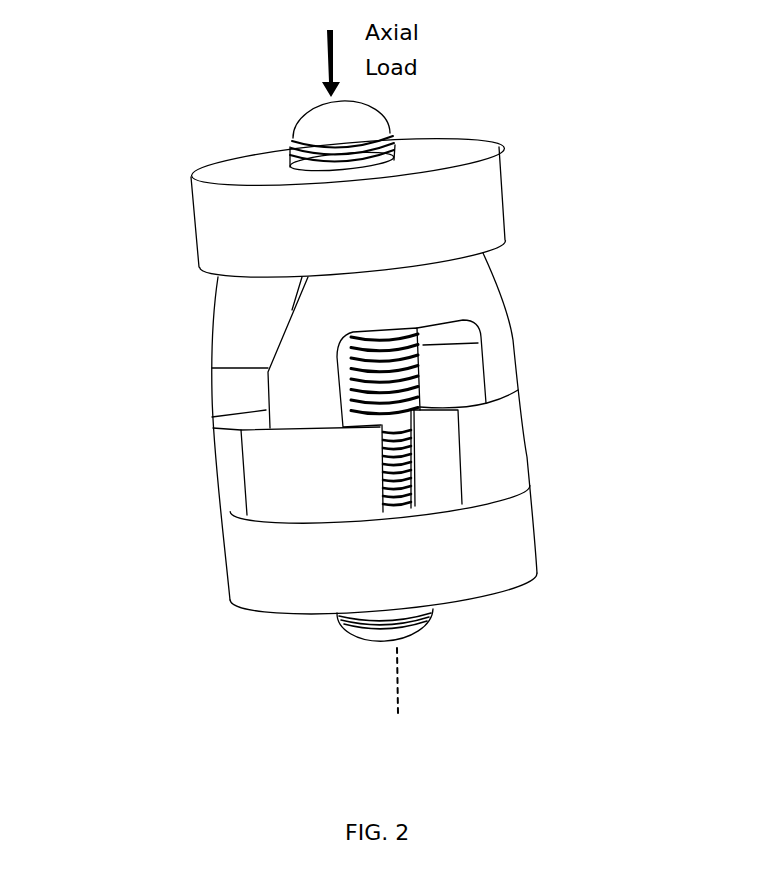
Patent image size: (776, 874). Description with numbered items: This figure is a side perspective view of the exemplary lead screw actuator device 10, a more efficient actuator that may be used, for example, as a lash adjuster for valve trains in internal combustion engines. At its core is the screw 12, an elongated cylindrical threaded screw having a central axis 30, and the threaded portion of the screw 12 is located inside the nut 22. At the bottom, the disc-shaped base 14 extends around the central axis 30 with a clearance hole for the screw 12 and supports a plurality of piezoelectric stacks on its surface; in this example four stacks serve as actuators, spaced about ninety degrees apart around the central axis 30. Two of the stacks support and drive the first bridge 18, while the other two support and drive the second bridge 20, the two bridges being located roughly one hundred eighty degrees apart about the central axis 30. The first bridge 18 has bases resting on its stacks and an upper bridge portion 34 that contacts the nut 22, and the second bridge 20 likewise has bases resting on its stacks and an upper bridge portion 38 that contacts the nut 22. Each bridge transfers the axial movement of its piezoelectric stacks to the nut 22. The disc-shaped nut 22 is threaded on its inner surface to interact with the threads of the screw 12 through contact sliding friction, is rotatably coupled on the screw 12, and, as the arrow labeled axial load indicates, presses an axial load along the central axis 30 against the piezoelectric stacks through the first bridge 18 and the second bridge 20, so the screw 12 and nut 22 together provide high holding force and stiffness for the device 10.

The lead screw actuator device 10 is at (605, 110).
The screw 12 is at (402, 107).
The base 14 is at (545, 540).
The first bridge 18 is at (190, 360).
The second bridge 20 is at (520, 314).
The nut 22 is at (172, 203).
The central axis 30 is at (416, 665).
The upper bridge portion 34 is at (235, 320).
The upper bridge portion 38 is at (466, 276).